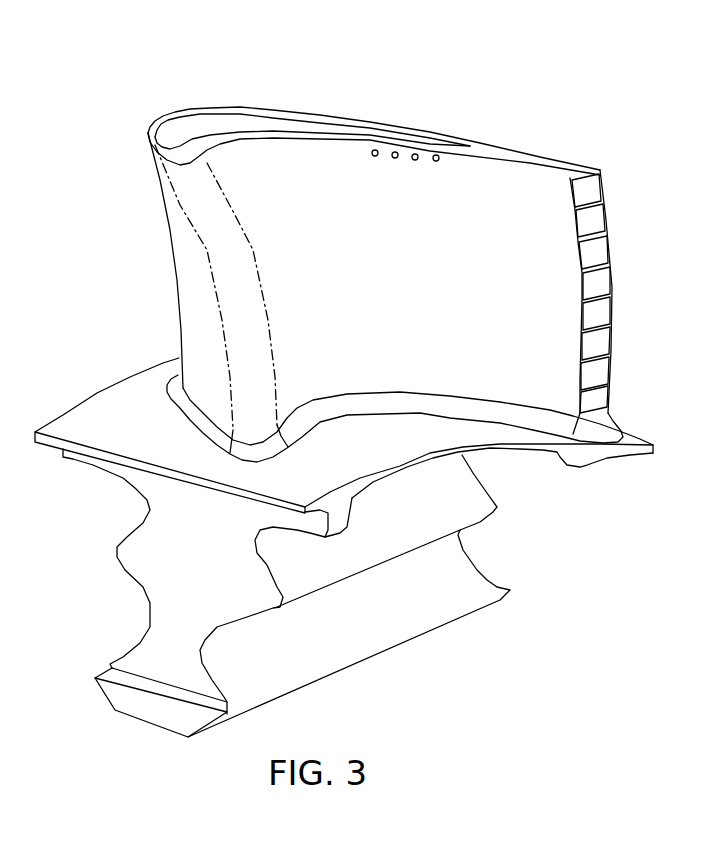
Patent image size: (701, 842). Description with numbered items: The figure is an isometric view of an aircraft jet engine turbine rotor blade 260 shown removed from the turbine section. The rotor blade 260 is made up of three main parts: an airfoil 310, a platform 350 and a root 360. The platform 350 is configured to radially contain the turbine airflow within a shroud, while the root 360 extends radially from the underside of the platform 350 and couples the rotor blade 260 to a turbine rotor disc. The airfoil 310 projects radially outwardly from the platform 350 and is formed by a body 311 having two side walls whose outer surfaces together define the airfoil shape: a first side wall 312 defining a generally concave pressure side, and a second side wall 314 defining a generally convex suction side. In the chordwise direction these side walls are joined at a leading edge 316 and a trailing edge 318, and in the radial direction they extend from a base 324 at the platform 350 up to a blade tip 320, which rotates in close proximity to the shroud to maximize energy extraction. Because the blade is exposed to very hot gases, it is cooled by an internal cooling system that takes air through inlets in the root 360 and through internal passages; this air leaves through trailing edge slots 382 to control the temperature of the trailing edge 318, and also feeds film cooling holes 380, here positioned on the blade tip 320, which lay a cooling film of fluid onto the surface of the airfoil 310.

The rotor blade 260 is at (573, 118).
The airfoil 310 is at (328, 157).
The body 311 is at (187, 265).
The first side wall 312 is at (426, 306).
The second side wall 314 is at (174, 295).
The leading edge 316 is at (183, 210).
The trailing edge 318 is at (610, 230).
The blade tip 320 is at (147, 133).
The base 324 is at (178, 393).
The platform 350 is at (362, 462).
The root 360 is at (165, 585).
The film cooling holes 380 is at (417, 162).
The trailing edge slots 382 is at (602, 318).